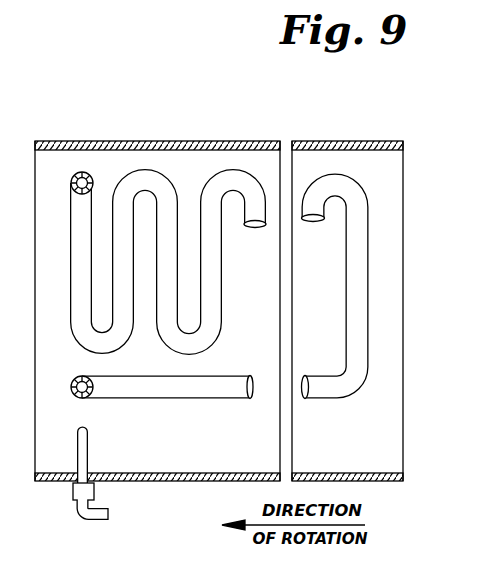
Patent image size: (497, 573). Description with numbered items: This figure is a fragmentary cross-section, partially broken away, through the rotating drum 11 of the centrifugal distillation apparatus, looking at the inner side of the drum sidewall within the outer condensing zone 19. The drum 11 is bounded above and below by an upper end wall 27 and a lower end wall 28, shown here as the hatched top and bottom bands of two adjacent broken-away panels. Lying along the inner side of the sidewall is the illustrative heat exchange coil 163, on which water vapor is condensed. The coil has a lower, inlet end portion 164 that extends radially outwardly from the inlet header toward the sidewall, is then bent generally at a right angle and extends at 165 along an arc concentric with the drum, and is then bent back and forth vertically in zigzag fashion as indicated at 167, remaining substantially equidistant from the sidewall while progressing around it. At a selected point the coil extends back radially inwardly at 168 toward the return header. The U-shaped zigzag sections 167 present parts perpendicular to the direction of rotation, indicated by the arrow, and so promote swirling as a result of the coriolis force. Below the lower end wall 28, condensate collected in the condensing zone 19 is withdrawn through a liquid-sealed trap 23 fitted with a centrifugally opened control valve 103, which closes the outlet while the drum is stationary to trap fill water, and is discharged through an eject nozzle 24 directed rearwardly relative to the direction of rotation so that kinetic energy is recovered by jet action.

The drum 11 is at (194, 322).
The condensing zone 19 is at (210, 227).
The liquid-sealed trap 23 is at (88, 455).
The eject nozzle 24 is at (80, 515).
The upper end wall 27 is at (187, 142).
The lower end wall 28 is at (268, 472).
The control valve 103 is at (75, 495).
The heat exchange coil 163 is at (308, 142).
The inlet end portion 164 is at (72, 395).
The arcuate coil portion 165 is at (185, 398).
The U-shaped zigzag sections 167 is at (95, 207).
The return portion 168 is at (88, 172).